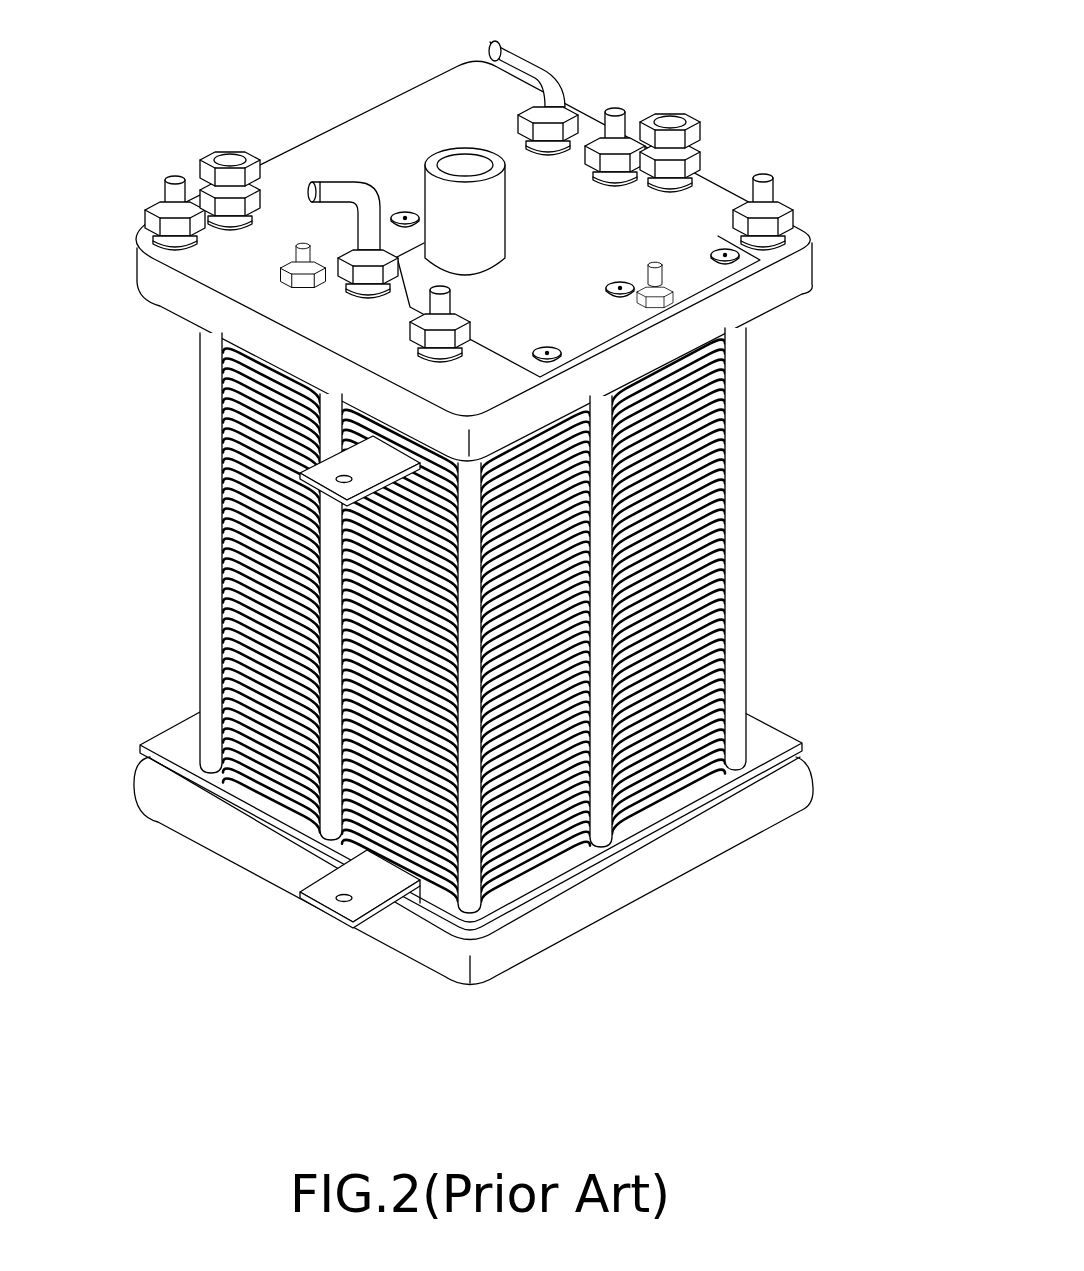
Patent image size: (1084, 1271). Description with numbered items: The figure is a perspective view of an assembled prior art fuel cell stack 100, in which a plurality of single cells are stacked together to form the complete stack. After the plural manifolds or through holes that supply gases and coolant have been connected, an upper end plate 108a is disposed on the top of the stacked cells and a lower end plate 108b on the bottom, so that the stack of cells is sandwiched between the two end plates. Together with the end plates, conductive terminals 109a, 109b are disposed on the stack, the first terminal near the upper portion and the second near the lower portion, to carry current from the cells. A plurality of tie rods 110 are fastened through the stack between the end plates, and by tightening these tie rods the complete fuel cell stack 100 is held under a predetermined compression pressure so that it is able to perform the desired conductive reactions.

The fuel cell stack 100 is at (498, 527).
The upper end plate 108a is at (795, 272).
The lower end plate 108b is at (790, 795).
The conductive terminal 109a is at (272, 437).
The conductive terminal 109b is at (343, 893).
The tie rods 110 is at (738, 548).